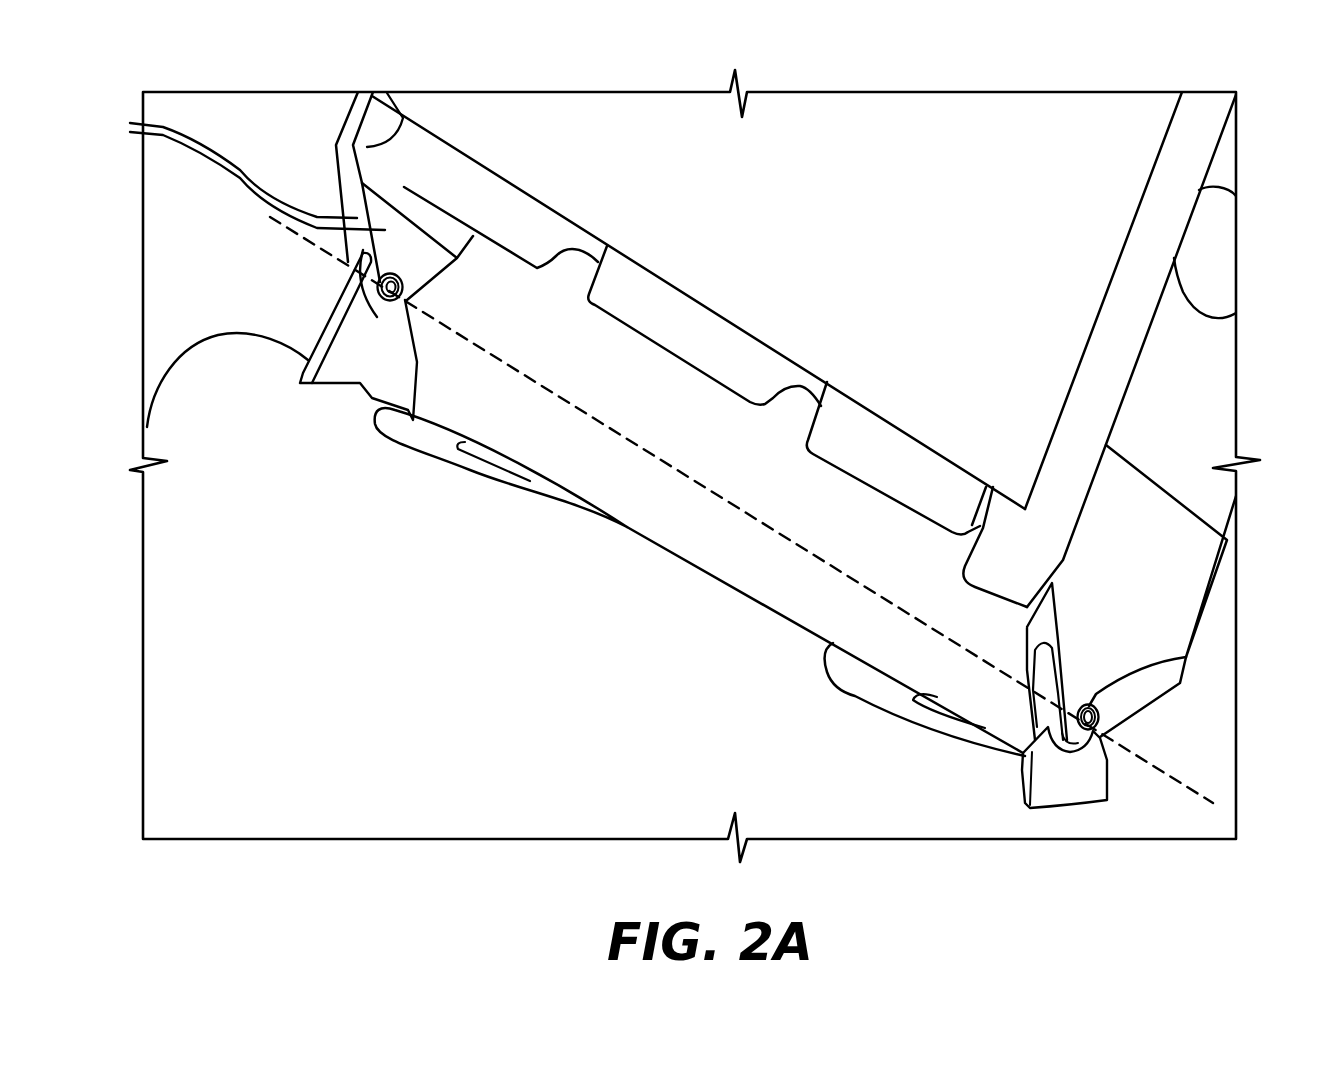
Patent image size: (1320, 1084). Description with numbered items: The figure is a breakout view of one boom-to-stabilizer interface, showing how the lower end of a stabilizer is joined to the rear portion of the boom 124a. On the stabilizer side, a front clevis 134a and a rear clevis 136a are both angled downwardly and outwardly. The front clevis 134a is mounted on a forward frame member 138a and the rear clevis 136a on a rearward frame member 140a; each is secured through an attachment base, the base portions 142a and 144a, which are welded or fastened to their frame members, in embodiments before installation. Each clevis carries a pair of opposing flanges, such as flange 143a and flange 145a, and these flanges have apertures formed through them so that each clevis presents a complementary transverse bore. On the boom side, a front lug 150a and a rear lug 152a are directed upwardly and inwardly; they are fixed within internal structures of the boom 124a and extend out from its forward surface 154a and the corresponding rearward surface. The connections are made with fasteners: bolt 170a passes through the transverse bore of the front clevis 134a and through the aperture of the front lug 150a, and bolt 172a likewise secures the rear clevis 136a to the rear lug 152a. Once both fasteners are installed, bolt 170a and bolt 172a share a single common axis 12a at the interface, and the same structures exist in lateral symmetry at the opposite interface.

The common axis 12a is at (630, 440).
The boom 124a is at (695, 466).
The front clevis 134a is at (1146, 717).
The rear clevis 136a is at (432, 292).
The forward frame member 138a is at (1187, 417).
The rearward frame member 140a is at (388, 100).
The base portion 142a is at (1187, 573).
The flange 143a is at (1030, 670).
The base portion 144a is at (403, 200).
The flange 145a is at (235, 270).
The front lug 150a is at (1090, 777).
The rear lug 152a is at (355, 318).
The forward surface 154a is at (370, 403).
The bolt 170a is at (1088, 704).
The bolt 172a is at (391, 298).